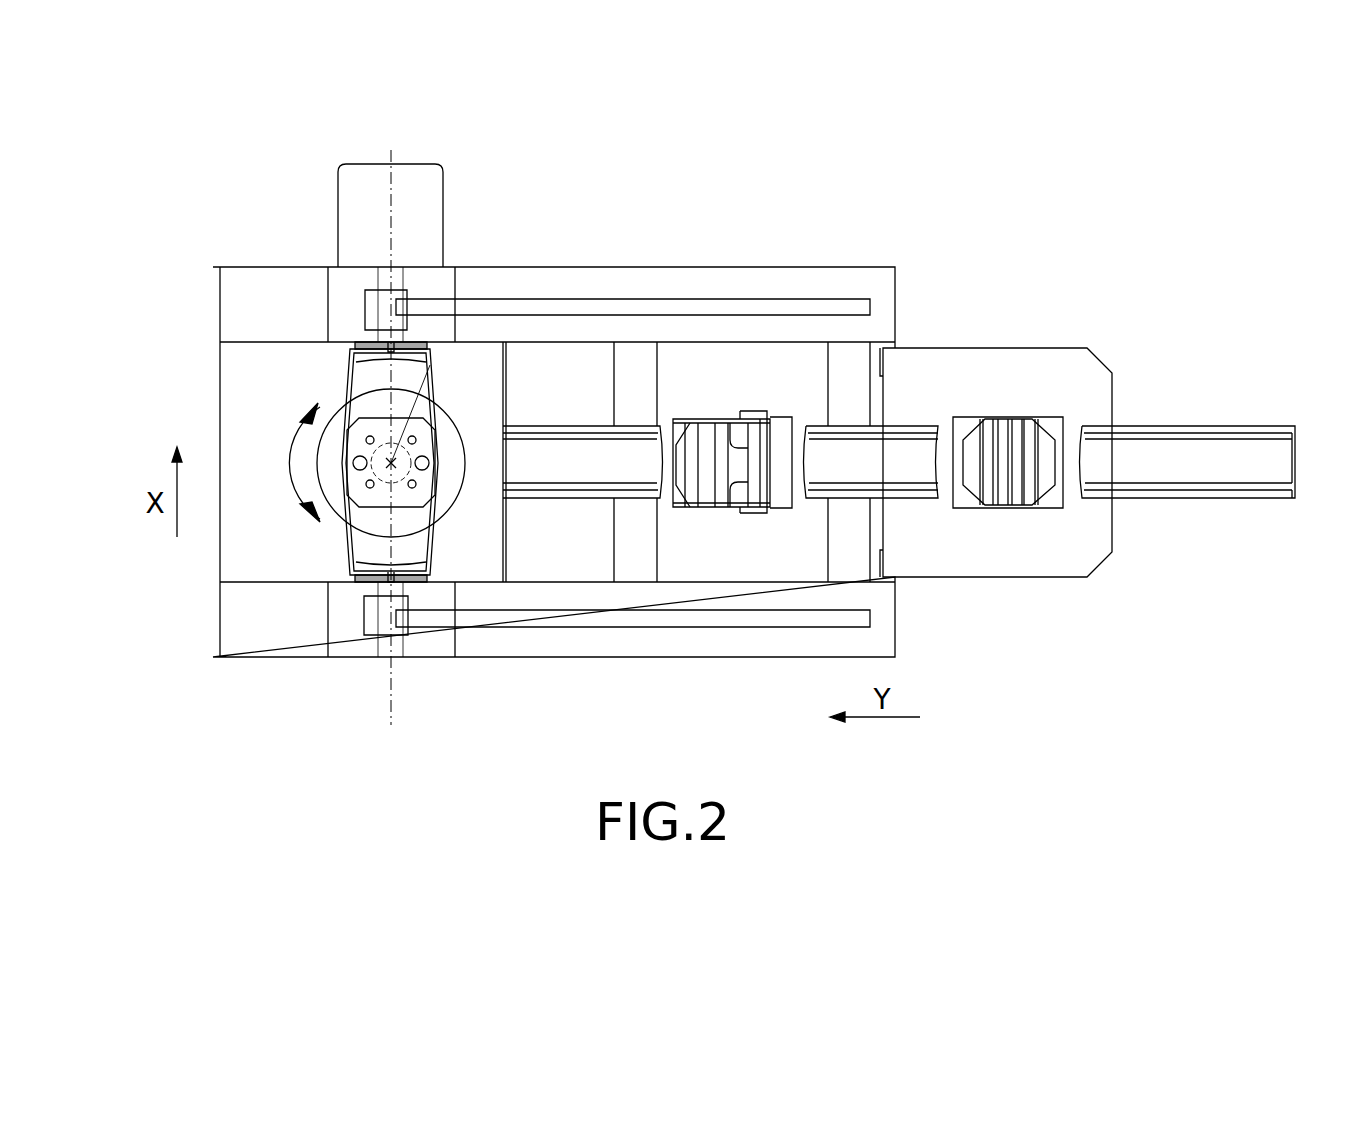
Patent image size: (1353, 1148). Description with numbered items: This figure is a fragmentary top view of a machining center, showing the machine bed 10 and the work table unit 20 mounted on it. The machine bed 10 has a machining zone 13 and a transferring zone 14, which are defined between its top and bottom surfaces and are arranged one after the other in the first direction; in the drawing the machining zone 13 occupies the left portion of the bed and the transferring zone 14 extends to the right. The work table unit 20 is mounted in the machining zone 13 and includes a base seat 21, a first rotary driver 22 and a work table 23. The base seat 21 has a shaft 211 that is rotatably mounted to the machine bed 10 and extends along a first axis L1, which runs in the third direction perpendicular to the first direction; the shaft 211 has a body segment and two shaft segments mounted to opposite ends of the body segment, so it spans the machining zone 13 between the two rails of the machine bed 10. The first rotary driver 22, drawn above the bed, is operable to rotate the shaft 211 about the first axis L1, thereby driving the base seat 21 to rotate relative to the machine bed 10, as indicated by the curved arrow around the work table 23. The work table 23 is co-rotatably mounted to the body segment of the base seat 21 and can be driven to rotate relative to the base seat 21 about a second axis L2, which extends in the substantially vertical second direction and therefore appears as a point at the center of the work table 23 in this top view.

The machine bed 10 is at (212, 269).
The machining zone 13 is at (242, 430).
The transferring zone 14 is at (730, 363).
The work table unit 20 is at (307, 429).
The base seat 21 is at (353, 392).
The shaft 211 is at (382, 285).
The first rotary driver 22 is at (345, 187).
The work table 23 is at (357, 493).
The first axis L1 is at (394, 457).
The second axis L2 is at (391, 463).